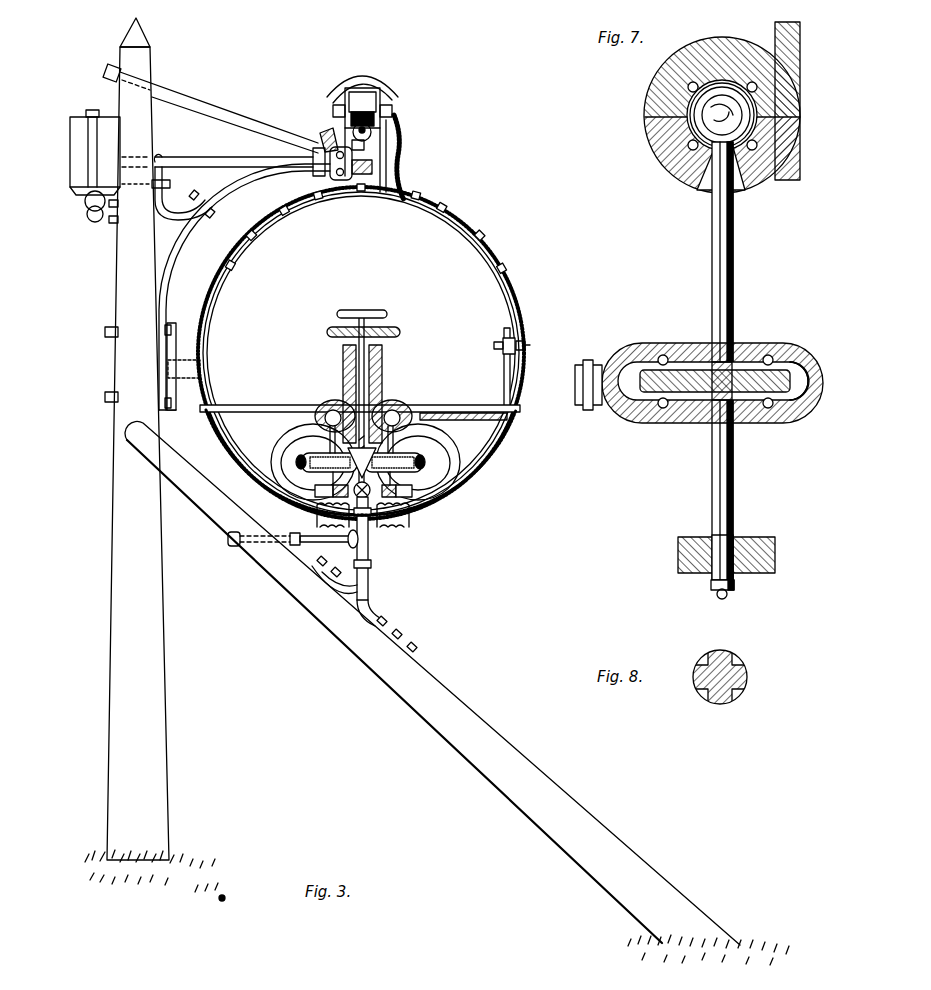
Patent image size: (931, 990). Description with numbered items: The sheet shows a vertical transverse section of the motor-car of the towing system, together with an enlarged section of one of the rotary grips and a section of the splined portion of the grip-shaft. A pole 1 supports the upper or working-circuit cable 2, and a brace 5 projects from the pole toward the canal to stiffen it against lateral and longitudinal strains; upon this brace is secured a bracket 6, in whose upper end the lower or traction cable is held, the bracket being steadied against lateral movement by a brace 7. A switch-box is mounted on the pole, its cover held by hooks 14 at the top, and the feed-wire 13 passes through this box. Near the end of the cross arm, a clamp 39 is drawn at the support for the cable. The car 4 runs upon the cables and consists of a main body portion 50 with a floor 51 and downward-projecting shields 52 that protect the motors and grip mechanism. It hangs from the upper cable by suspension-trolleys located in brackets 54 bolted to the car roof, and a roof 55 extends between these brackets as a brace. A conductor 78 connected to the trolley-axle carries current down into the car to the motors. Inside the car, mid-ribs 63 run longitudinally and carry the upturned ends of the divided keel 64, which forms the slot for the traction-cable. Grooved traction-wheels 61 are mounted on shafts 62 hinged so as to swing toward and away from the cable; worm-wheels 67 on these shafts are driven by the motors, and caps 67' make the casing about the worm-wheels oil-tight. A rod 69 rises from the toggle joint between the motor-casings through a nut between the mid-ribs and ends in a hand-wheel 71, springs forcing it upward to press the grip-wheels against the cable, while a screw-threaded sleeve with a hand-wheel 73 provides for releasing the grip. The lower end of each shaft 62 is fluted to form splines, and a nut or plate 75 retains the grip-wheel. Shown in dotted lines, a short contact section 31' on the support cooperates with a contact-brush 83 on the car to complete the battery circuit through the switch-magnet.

In FIG. 3, the pole 1 is at (155, 459).
In FIG. 3, the hooks 14 is at (94, 113).
In FIG. 3, the feed-wire 13 is at (88, 214).
In FIG. 3, the upper cable 2 is at (340, 128).
In FIG. 3, the roof 55 is at (345, 90).
In FIG. 3, the trolley-brackets 54 is at (390, 101).
In FIG. 3, the clamp 39 is at (342, 152).
In FIG. 3, the car 4 is at (361, 351).
In FIG. 3, the conductor 78 is at (445, 233).
In FIG. 3, the main body portion 50 is at (520, 349).
In FIG. 3, the floor 51 is at (360, 403).
In FIG. 3, the short section 31' is at (179, 366).
In FIG. 3, the contact-brush 83 is at (190, 378).
In FIG. 3, the hand-wheel 71 is at (363, 395).
In FIG. 3, the rod 69 is at (372, 325).
In FIG. 3, the hand-wheel 73 is at (374, 336).
In FIG. 3, the mid-ribs 63 is at (345, 379).
In FIG. 3, the grip-shafts 62 is at (300, 446).
In FIG. 7, the grip-shafts 62 is at (736, 233).
In FIG. 3, the traction-wheels 61 is at (320, 495).
In FIG. 7, the traction-wheels 61 is at (740, 557).
In FIG. 3, the divided keel 64 is at (395, 526).
In FIG. 3, the brackets 6 is at (369, 556).
In FIG. 3, the braces 7 is at (293, 547).
In FIG. 3, the shields 52 is at (240, 472).
In FIG. 3, the braces 5 is at (457, 693).
In FIG. 7, the worm-wheels 67 is at (711, 383).
In FIG. 7, the caps 67' is at (820, 381).
In FIG. 7, the nut or plate 75 is at (737, 592).